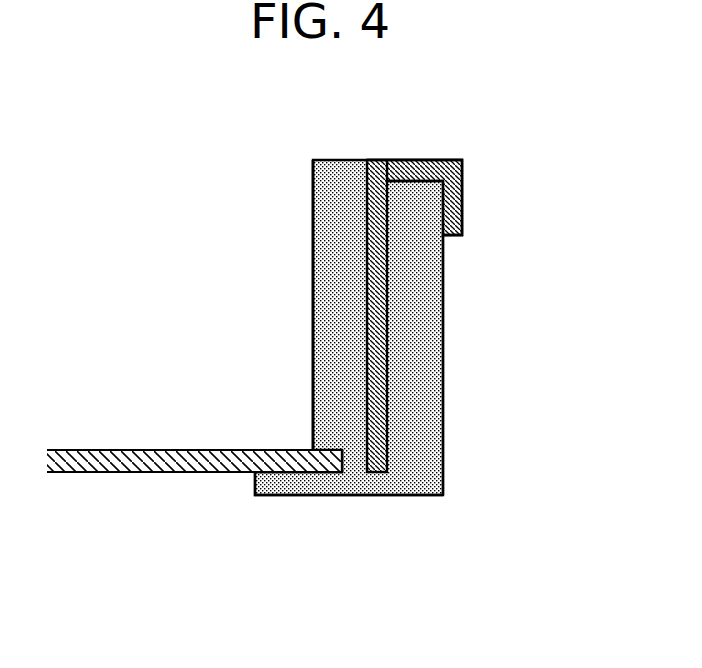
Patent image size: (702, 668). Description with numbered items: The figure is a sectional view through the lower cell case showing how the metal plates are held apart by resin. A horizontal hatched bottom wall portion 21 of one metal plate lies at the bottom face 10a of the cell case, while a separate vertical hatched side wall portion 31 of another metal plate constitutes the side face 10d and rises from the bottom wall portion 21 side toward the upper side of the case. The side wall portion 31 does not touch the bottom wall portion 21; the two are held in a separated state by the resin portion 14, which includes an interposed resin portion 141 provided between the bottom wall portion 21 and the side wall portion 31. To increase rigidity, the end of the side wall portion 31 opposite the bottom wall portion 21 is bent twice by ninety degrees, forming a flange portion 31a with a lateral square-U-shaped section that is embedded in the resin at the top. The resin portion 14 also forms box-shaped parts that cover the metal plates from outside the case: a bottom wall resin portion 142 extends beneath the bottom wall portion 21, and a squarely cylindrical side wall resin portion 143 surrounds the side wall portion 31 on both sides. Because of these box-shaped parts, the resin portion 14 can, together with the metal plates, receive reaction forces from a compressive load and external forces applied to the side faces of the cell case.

The resin portion 14 is at (470, 499).
The interposed resin portion 141 is at (350, 463).
The bottom wall resin portion 142 is at (285, 485).
The side wall resin portion 143 is at (325, 290).
The side wall portion 31 is at (399, 283).
The flange portion 31a is at (402, 158).
The bottom face 10a is at (203, 447).
The side face 10d is at (306, 331).
The bottom wall portion 21 is at (194, 395).